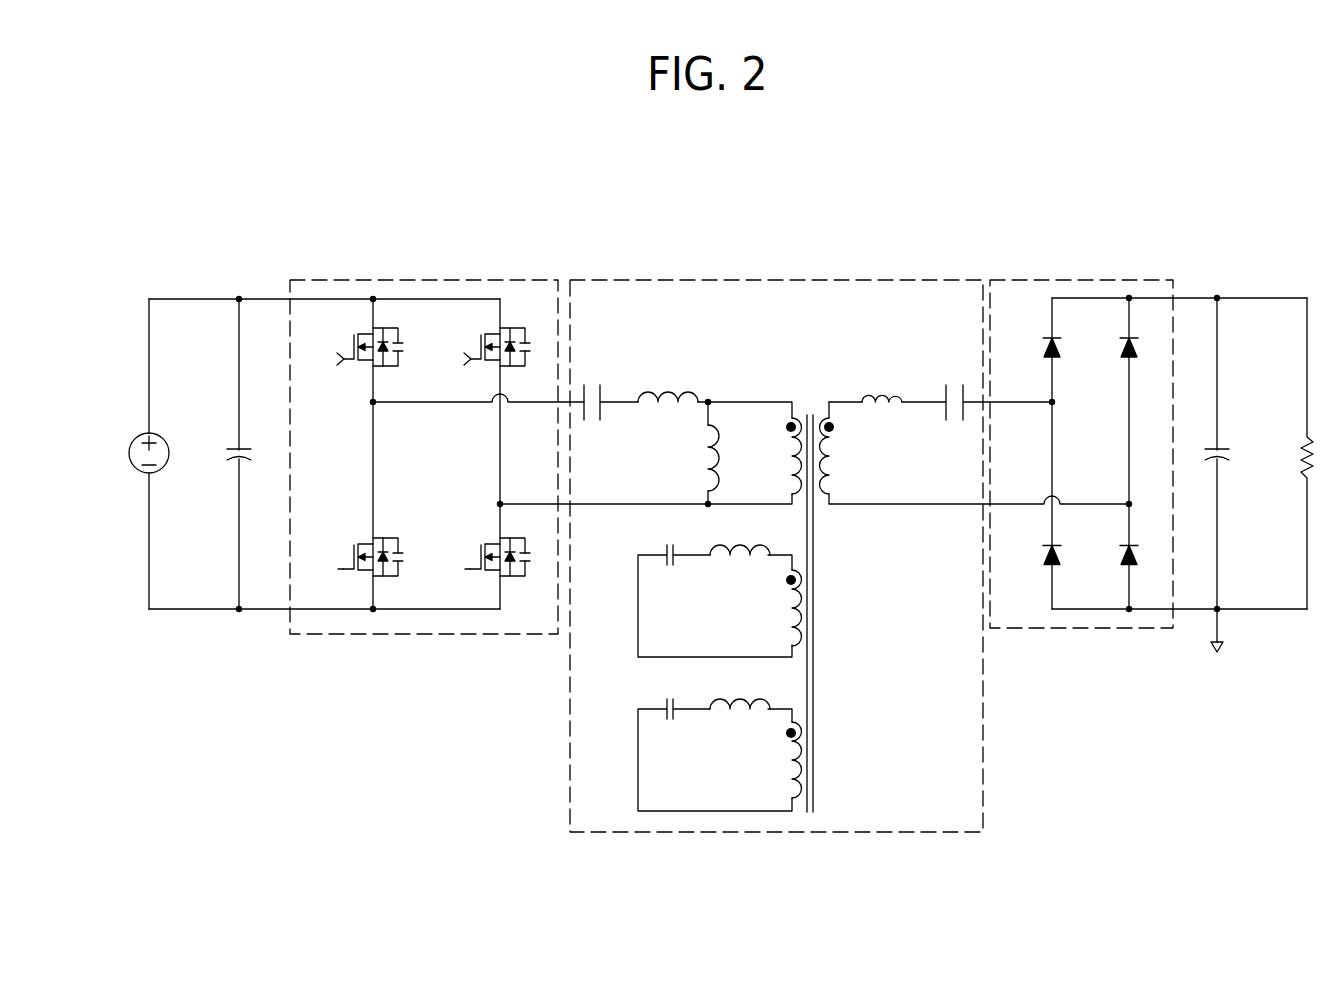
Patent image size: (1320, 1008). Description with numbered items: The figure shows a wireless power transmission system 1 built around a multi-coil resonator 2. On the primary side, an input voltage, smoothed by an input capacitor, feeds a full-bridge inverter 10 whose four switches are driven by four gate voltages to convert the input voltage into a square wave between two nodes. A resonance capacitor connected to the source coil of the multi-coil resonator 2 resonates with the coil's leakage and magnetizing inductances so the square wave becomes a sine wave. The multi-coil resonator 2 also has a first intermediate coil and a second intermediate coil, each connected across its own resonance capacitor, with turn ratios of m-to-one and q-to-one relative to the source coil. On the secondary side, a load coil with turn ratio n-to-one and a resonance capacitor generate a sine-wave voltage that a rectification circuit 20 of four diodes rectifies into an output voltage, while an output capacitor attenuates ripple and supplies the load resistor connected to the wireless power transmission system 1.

The wireless power transmission system 1 is at (1000, 192).
The full-bridge inverter 10 is at (445, 280).
The multi-coil resonator 2 is at (782, 280).
The rectification circuit 20 is at (1080, 280).